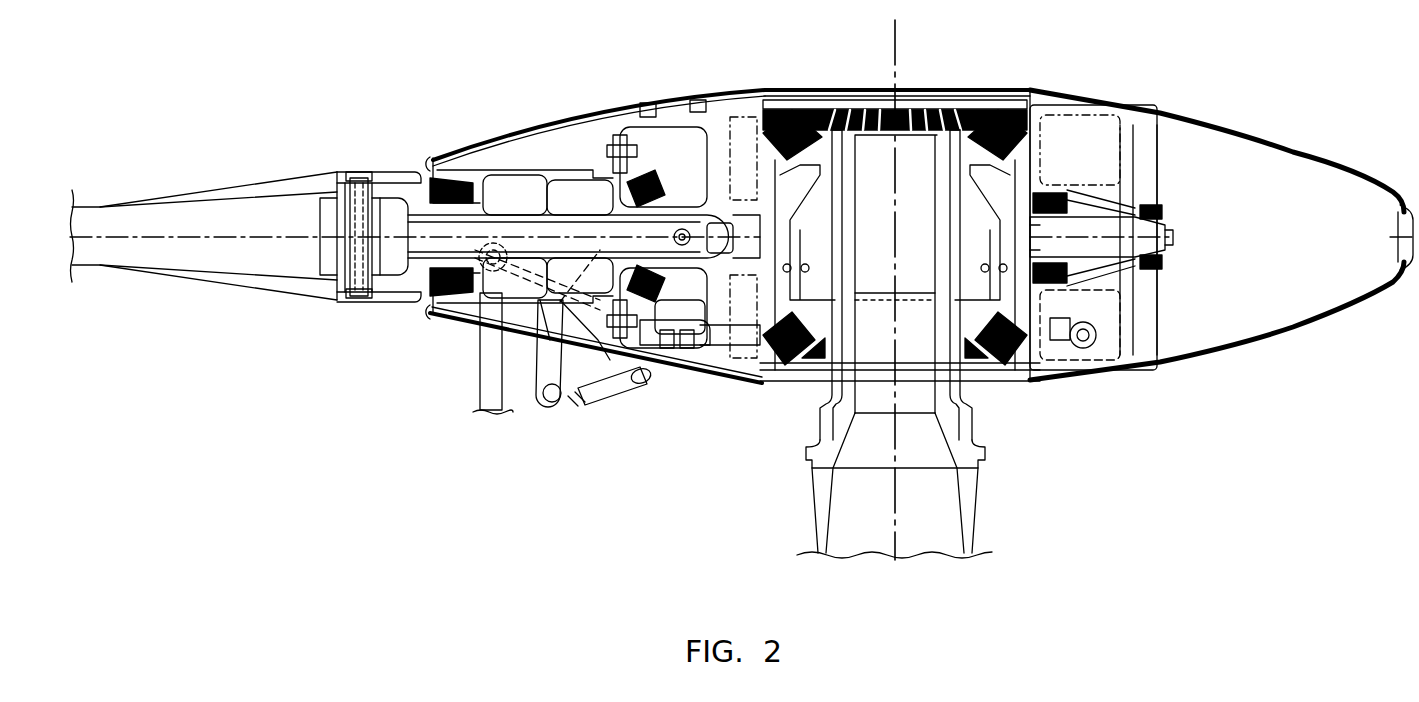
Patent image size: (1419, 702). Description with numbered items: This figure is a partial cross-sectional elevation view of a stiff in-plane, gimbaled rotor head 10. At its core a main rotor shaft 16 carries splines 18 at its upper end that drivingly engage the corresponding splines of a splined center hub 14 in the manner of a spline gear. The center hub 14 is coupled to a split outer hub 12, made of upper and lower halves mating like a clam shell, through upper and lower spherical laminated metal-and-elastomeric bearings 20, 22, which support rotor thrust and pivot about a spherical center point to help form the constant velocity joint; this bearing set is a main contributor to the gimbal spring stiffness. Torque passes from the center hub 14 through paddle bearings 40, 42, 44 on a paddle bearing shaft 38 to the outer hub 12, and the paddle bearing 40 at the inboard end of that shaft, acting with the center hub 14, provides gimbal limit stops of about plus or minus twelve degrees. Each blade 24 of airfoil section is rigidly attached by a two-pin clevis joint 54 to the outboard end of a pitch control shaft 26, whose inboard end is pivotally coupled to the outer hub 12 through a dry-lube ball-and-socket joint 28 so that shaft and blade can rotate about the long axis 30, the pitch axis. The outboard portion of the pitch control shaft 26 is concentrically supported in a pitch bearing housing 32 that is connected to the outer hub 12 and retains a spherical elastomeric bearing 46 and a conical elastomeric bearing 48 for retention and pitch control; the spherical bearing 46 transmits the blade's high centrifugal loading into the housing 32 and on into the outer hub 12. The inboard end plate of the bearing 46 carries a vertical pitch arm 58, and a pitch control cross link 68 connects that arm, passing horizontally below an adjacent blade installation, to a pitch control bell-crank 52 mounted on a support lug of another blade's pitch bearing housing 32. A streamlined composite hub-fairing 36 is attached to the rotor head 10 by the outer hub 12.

The rotor head 10 is at (1101, 65).
The split outer hub 12 is at (747, 330).
The splined center hub 14 is at (830, 195).
The main rotor shaft 16 is at (975, 506).
The splines 18 is at (790, 190).
The upper spherical HCL bearing 20 is at (969, 88).
The lower spherical HCL bearing 22 is at (777, 360).
The blade 24 is at (100, 207).
The pitch control shaft 26 is at (523, 210).
The dry-lube ball-and-socket joint 28 is at (697, 203).
The long axis 30 is at (178, 232).
The pitch bearing housing 32 is at (540, 170).
The hub-fairing 36 is at (1240, 126).
The paddle bearing shaft 38 is at (1097, 225).
The paddle bearing 40 is at (1020, 170).
The paddle bearing 42 is at (1053, 193).
The paddle bearing 44 is at (1160, 260).
The spherical elastomeric bearing 46 is at (673, 370).
The conical elastomeric bearing 48 is at (437, 293).
The pitch control bell-crank 52 is at (545, 360).
The two-pin clevis joint 54 is at (350, 210).
The pitch arm 58 is at (690, 358).
The pitch control cross link 68 is at (622, 393).